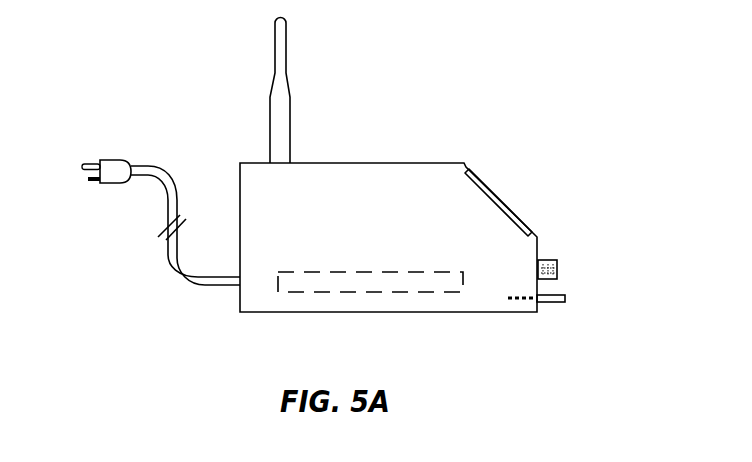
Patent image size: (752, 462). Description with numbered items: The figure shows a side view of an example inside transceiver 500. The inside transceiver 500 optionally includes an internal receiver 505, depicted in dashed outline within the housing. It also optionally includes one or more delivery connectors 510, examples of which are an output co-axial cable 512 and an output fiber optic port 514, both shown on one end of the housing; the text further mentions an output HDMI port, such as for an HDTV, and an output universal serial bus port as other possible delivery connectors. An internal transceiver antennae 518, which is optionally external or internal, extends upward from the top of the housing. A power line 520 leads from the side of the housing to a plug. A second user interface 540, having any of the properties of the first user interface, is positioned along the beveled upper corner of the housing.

The inside transceiver 500 is at (557, 95).
The internal receiver 505 is at (438, 267).
The delivery connectors 510 is at (622, 285).
The output co-axial cable 512 is at (550, 260).
The output fiber optic port 514 is at (549, 302).
The internal transceiver antennae 518 is at (270, 115).
The power line 520 is at (112, 158).
The second user interface 540 is at (502, 193).